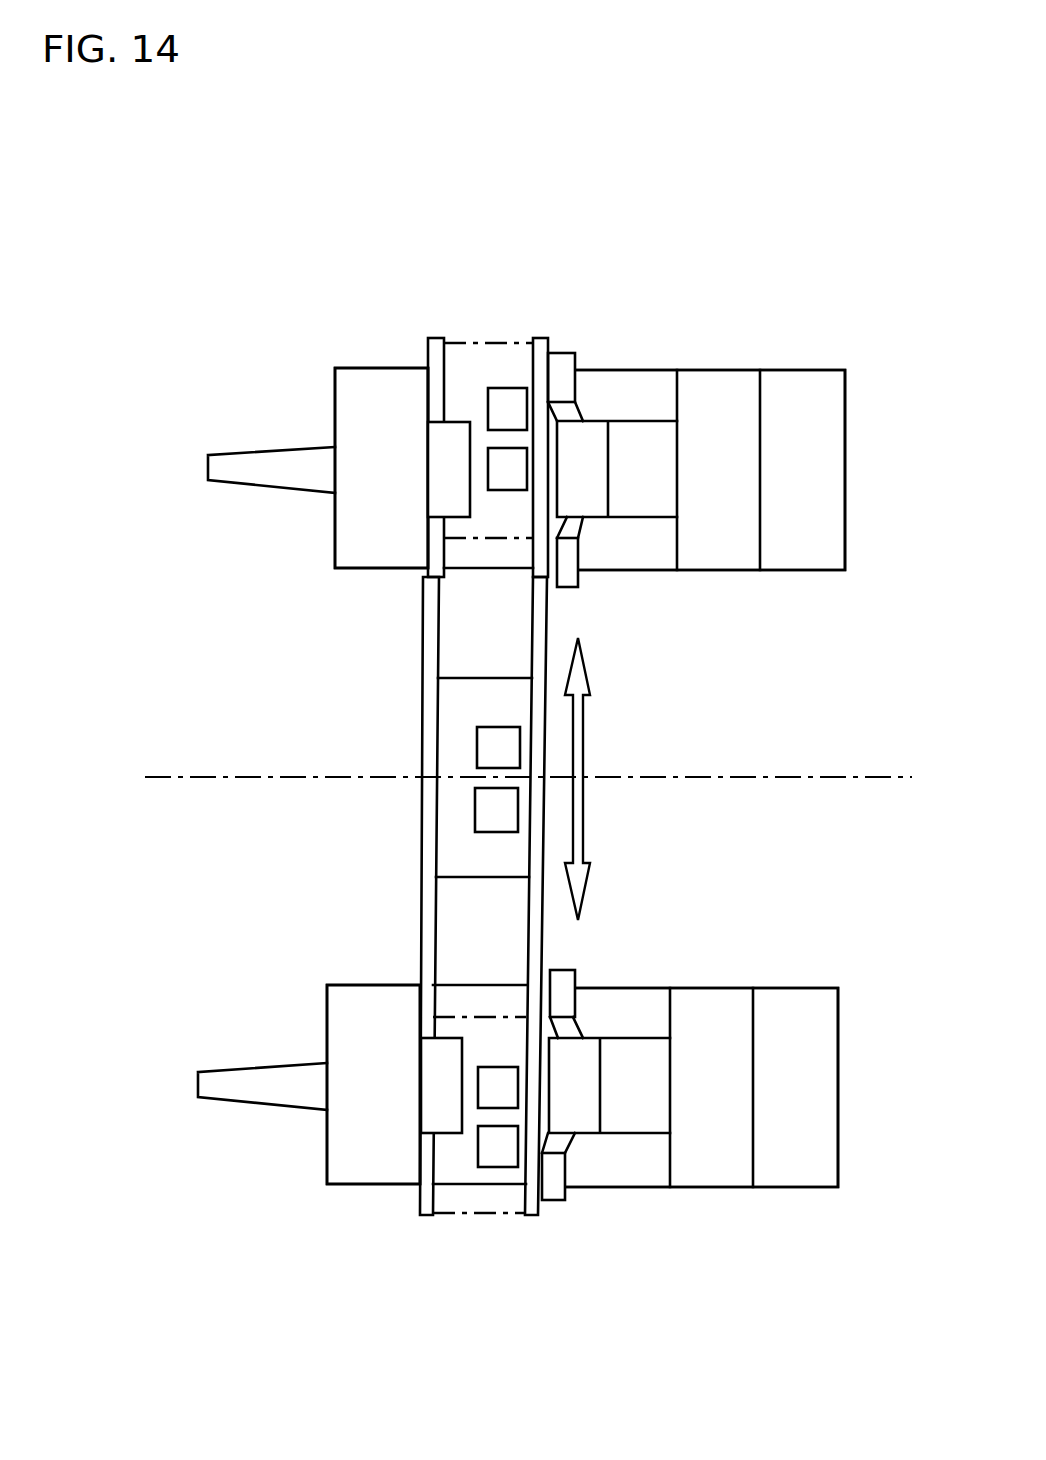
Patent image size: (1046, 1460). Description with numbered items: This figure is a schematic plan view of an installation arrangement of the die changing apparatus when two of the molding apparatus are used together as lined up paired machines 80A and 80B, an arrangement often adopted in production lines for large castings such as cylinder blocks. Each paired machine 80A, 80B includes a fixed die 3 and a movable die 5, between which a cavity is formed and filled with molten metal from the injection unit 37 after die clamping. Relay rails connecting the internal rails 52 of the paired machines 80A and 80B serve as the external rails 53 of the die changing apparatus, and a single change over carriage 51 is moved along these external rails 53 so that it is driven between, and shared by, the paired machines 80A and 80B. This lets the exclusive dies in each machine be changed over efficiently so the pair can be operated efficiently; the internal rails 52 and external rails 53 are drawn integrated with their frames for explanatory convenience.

The fixed die 3 is at (320, 556).
The movable die 5 is at (735, 354).
The injection unit 37 is at (267, 465).
The change over carriage 51 is at (478, 357).
The internal rails 52 is at (542, 350).
The external rails 53 is at (418, 903).
The paired machine 80A is at (312, 346).
The paired machine 80B is at (324, 1218).